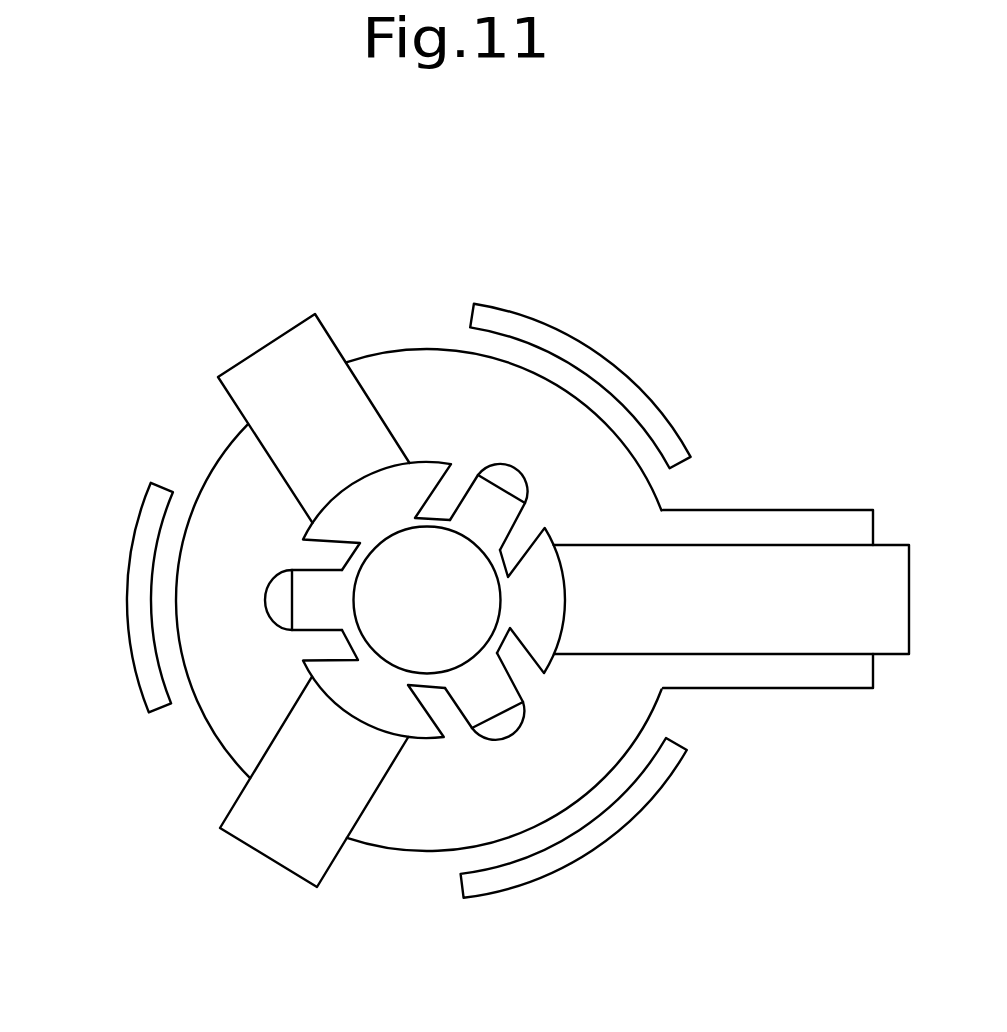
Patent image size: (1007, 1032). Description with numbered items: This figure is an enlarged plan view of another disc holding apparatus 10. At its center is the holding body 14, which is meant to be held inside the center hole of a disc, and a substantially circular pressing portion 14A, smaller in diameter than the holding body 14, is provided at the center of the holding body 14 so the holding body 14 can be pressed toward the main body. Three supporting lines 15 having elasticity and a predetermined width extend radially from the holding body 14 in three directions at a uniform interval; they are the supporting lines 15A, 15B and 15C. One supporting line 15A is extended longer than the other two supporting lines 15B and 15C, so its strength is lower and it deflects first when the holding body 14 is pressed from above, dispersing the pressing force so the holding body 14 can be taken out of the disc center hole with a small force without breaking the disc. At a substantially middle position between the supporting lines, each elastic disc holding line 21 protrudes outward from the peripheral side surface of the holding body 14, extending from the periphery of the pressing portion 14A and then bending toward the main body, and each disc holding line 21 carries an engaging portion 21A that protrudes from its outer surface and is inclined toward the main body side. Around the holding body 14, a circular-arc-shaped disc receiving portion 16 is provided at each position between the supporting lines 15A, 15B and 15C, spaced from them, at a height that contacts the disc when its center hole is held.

The disc holding apparatus 10 is at (557, 287).
The holding body 14 is at (363, 690).
The pressing portion 14A is at (428, 632).
The supporting line 15 is at (253, 325).
The supporting line 15A is at (793, 547).
The supporting line 15B is at (338, 332).
The supporting line 15C is at (335, 862).
The disc receiving portion 16 is at (623, 368).
The disc holding line 21 is at (467, 488).
The engaging portion 21A is at (513, 462).